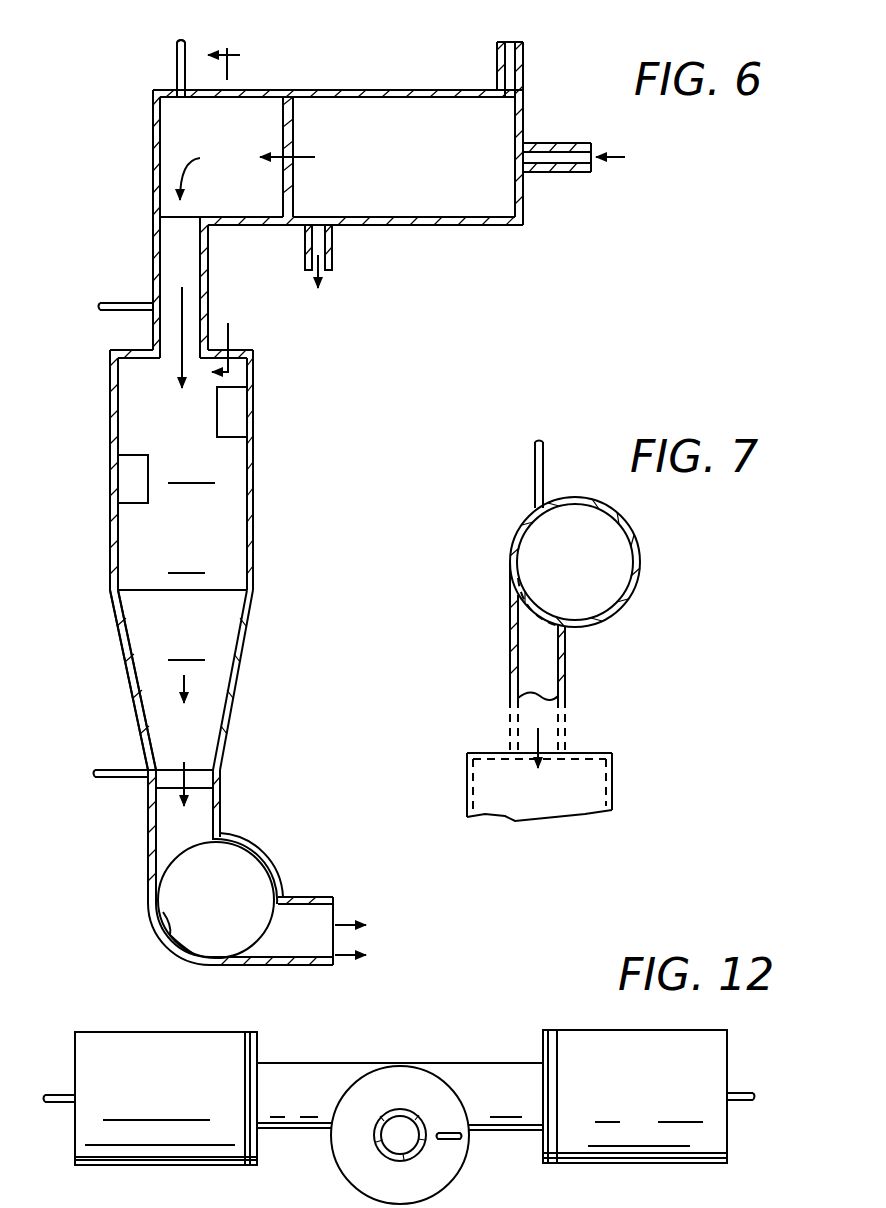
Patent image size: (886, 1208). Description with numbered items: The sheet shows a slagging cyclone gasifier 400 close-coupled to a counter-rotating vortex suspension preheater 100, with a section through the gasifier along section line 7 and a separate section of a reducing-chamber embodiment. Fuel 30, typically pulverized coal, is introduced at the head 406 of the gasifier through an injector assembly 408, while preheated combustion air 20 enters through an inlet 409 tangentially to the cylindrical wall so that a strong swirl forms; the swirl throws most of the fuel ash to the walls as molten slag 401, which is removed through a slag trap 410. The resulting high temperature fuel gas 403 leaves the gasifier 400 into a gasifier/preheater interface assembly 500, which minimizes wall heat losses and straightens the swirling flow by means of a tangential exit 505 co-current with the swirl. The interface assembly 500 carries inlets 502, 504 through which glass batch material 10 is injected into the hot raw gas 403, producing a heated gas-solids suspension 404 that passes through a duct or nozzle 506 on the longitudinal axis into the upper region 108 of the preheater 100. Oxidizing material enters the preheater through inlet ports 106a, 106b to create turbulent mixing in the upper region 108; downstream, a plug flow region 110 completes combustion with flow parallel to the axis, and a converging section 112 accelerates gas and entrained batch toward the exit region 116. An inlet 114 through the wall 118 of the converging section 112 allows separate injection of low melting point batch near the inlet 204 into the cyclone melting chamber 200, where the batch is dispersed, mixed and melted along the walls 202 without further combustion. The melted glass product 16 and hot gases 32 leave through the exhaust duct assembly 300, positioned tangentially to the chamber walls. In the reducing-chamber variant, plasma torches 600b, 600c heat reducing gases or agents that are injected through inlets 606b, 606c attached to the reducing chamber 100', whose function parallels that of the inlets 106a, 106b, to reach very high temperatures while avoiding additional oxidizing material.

In FIG. 6, the glass batch material 10 is at (178, 34).
In FIG. 7, the glass batch material 10 is at (539, 436).
In FIG. 6, the section line 7 is at (234, 61).
In FIG. 6, the melted glass product 16 is at (186, 942).
In FIG. 6, the preheated combustion air 20 is at (510, 38).
In FIG. 6, the fuel 30 is at (630, 165).
In FIG. 6, the hot gases 32 is at (369, 930).
In FIG. 6, the preheater 100 is at (220, 560).
In FIG. 7, the preheater 100 is at (580, 782).
In FIG. 12, the reducing chamber 100' is at (430, 1137).
In FIG. 6, the inlet port 106a is at (132, 475).
In FIG. 6, the inlet port 106b is at (242, 415).
In FIG. 6, the upper region 108 is at (192, 468).
In FIG. 6, the plug flow region 110 is at (192, 558).
In FIG. 6, the converging section 112 is at (192, 666).
In FIG. 6, the inlet 114 is at (108, 768).
In FIG. 6, the exit region 116 is at (192, 767).
In FIG. 6, the wall 118 is at (140, 728).
In FIG. 6, the cyclone melting chamber 200 is at (300, 860).
In FIG. 6, the walls 202 is at (252, 858).
In FIG. 6, the inlet 204 is at (226, 828).
In FIG. 6, the exhaust duct assembly 300 is at (270, 968).
In FIG. 6, the slagging cyclone gasifier 400 is at (381, 86).
In FIG. 7, the slagging cyclone gasifier 400 is at (641, 586).
In FIG. 6, the molten slag 401 is at (320, 222).
In FIG. 6, the fuel gas 403 is at (319, 160).
In FIG. 6, the gas-solids suspension 404 is at (193, 359).
In FIG. 7, the gas-solids suspension 404 is at (549, 768).
In FIG. 6, the head 406 is at (524, 200).
In FIG. 6, the injector assembly 408 is at (558, 128).
In FIG. 6, the inlet 409 is at (548, 72).
In FIG. 6, the slag trap 410 is at (332, 238).
In FIG. 6, the gasifier/preheater interface assembly 500 is at (152, 147).
In FIG. 6, the inlet 502 is at (176, 60).
In FIG. 6, the inlet 504 is at (112, 300).
In FIG. 6, the tangential exit 505 is at (208, 250).
In FIG. 6, the nozzle 506 is at (152, 338).
In FIG. 7, the nozzle 506 is at (568, 734).
In FIG. 12, the plasma torch 600b is at (186, 1168).
In FIG. 12, the plasma torch 600c is at (658, 1166).
In FIG. 12, the inlet 606b is at (293, 1062).
In FIG. 12, the inlet 606c is at (500, 1047).